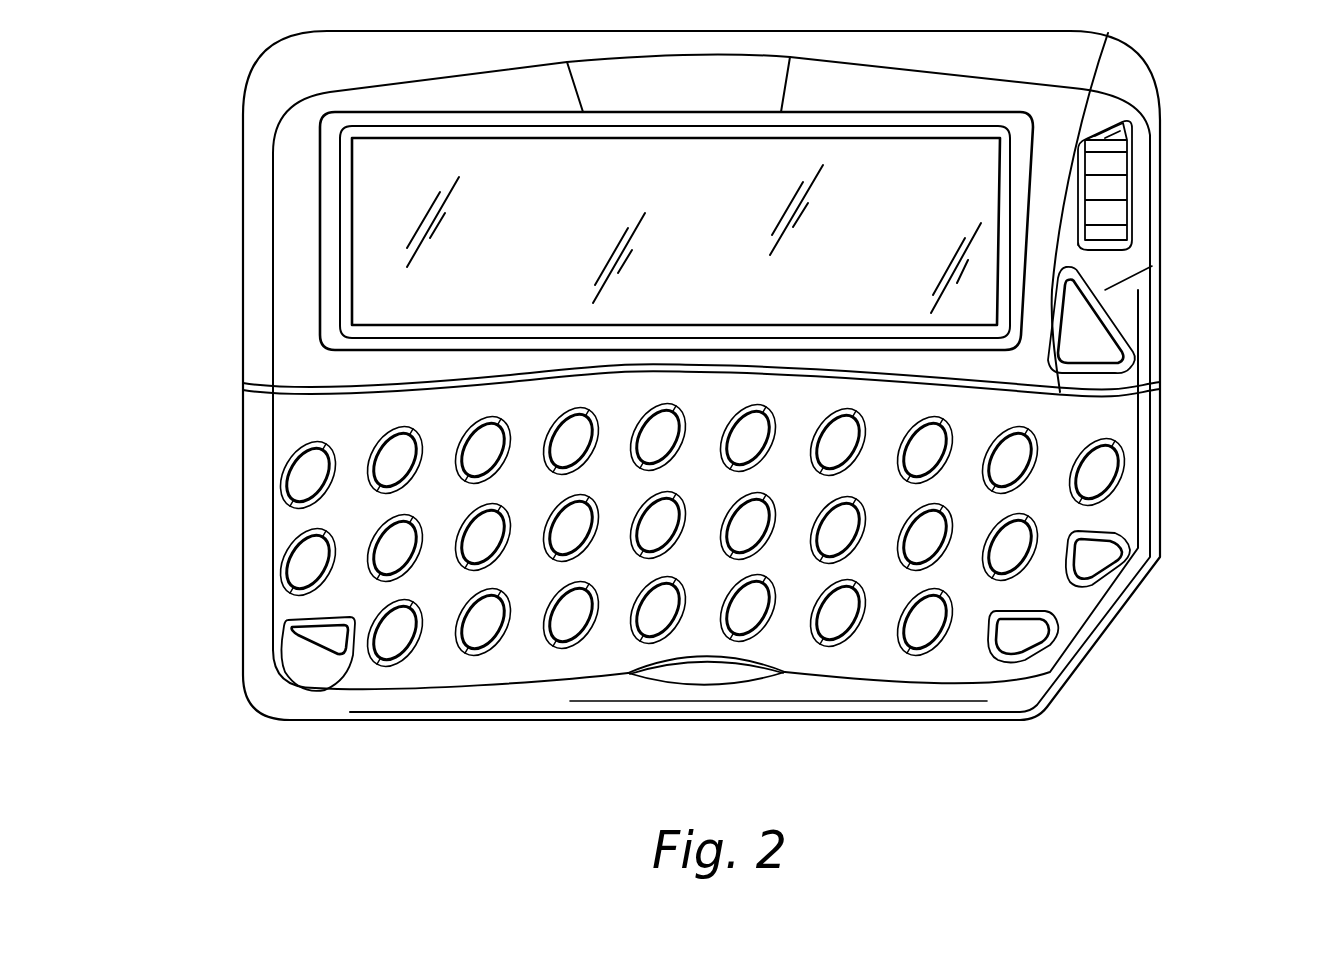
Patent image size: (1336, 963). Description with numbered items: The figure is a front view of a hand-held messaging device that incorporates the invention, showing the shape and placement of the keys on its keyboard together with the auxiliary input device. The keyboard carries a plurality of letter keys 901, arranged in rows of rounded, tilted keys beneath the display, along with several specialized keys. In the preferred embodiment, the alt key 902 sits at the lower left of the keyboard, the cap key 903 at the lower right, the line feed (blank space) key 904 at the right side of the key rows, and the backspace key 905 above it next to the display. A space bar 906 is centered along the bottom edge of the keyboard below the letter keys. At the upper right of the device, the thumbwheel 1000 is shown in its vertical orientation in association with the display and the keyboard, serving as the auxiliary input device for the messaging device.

The thumbwheel 1000 is at (1120, 201).
The backspace key 905 is at (1092, 340).
The letter keys 901 is at (1100, 475).
The line feed key 904 is at (1095, 560).
The cap key 903 is at (1023, 635).
The alt key 902 is at (322, 638).
The space bar 906 is at (715, 672).